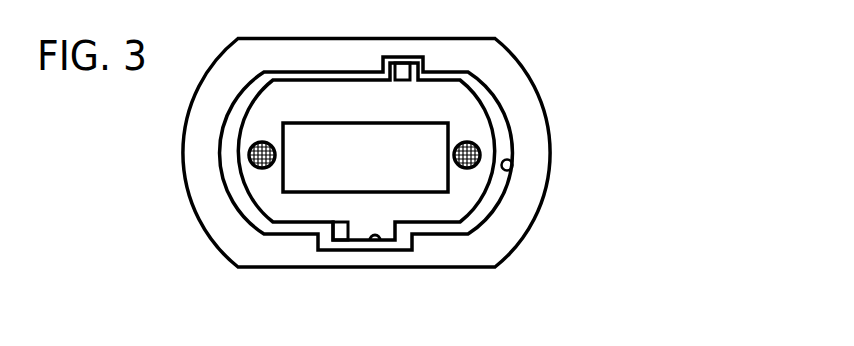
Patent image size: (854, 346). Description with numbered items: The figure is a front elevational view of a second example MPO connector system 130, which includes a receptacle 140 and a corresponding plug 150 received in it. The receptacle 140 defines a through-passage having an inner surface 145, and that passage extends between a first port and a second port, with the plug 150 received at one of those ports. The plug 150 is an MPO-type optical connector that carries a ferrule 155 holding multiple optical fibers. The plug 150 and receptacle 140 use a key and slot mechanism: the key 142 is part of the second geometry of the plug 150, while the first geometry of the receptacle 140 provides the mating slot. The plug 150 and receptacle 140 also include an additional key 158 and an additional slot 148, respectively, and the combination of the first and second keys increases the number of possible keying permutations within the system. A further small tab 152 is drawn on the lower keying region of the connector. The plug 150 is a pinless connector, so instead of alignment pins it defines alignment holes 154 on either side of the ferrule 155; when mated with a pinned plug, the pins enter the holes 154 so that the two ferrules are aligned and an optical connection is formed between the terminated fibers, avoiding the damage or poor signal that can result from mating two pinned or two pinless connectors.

The connector system 130 is at (688, 109).
The receptacle 140 is at (411, 160).
The plug 150 is at (426, 153).
The slot 148 is at (366, 151).
The key 158 is at (436, 40).
The lower key tab 152 is at (304, 275).
The key 142 is at (387, 243).
The ferrule 155 is at (387, 170).
The alignment holes 154 is at (287, 175).
The inner surface 145 is at (511, 161).